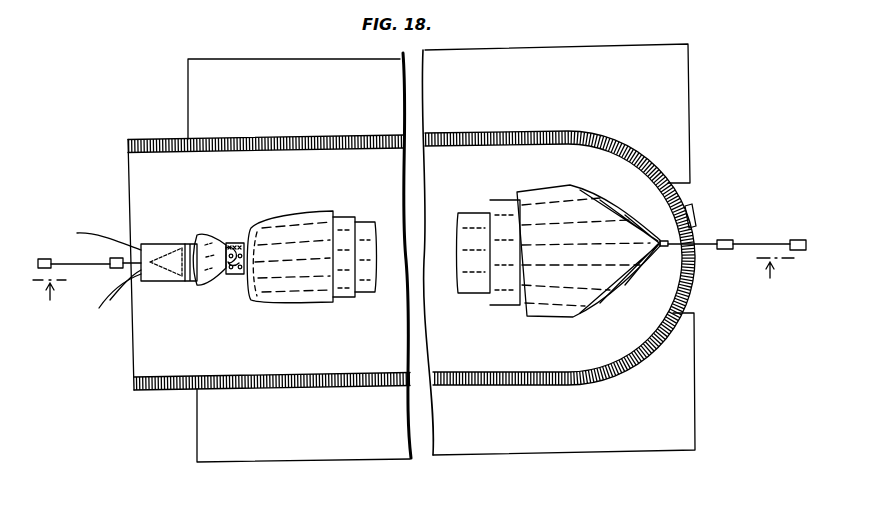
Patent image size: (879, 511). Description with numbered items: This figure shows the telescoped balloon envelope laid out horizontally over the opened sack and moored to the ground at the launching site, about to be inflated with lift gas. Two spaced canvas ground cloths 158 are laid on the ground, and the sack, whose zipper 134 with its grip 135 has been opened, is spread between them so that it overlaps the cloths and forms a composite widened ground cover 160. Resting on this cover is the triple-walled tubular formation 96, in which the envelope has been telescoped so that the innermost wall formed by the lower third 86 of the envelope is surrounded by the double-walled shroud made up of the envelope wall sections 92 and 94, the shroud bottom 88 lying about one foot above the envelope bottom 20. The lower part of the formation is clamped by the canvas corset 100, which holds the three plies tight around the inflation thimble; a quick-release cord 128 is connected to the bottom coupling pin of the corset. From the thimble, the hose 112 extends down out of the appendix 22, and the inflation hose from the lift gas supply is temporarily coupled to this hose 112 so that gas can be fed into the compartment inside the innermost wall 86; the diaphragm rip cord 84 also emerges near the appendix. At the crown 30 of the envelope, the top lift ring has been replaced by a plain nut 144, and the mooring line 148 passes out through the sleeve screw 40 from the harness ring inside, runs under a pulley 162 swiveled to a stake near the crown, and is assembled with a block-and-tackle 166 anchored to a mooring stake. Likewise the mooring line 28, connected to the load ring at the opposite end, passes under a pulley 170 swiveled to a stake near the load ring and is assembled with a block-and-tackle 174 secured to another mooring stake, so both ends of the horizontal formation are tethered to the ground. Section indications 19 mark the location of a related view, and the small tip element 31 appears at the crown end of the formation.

The section line 19 is at (413, 289).
The envelope bottom 20 is at (191, 243).
The appendix 22 is at (155, 243).
The mooring line 28 is at (107, 283).
The envelope crown 30 is at (592, 300).
The tip 31 is at (663, 250).
The sleeve screw 40 is at (668, 247).
The diaphragm rip cord 84 is at (99, 233).
The lower third of the envelope 86 is at (369, 297).
The shroud bottom 88 is at (201, 283).
The envelope wall section 92 is at (348, 299).
The envelope wall section 94 is at (290, 304).
The triple-walled tubular formation 96 is at (473, 202).
The corset 100 is at (233, 242).
The hose 112 is at (105, 309).
The quick-release cord 128 is at (233, 297).
The zipper 134 is at (329, 136).
The zipper grip 135 is at (700, 212).
The plain nut 144 is at (663, 240).
The mooring line 148 is at (706, 246).
The ground cloths 158 is at (428, 78).
The composite widened ground cover 160 is at (710, 318).
The pulley 162 is at (723, 250).
The block-and-tackle 166 is at (811, 253).
The pulley 170 is at (109, 257).
The block-and-tackle 174 is at (37, 258).